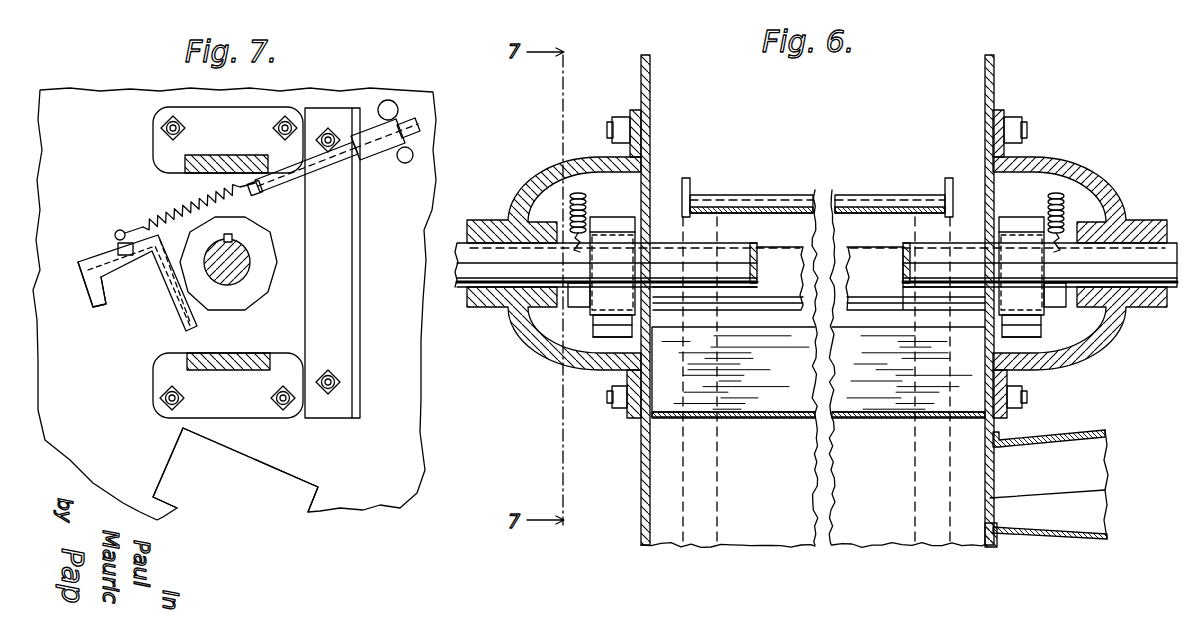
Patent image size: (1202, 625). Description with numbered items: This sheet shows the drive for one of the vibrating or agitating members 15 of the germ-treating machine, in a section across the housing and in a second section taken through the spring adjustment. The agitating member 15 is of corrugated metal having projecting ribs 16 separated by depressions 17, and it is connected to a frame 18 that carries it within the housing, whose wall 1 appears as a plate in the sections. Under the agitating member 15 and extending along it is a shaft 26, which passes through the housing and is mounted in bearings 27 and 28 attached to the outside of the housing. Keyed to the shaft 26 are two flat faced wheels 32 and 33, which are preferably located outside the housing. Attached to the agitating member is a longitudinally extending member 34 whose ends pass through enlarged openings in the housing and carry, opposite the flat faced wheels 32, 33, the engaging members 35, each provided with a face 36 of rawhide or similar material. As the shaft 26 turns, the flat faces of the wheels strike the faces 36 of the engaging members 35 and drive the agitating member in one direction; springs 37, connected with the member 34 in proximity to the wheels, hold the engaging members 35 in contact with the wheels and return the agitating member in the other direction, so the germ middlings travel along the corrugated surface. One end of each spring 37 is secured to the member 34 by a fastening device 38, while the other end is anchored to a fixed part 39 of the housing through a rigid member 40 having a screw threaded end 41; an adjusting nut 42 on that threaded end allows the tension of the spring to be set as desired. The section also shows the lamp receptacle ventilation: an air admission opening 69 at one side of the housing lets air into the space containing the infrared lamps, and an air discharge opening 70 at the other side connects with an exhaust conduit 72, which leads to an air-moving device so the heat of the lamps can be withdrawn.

In FIG. 7, the frame plate 1 is at (418, 433).
In FIG. 6, the frame plate 1 is at (994, 72).
In FIG. 6, the vibrating or agitating member 15 is at (872, 186).
In FIG. 6, the projecting ribs 16 is at (777, 207).
In FIG. 6, the depressions 17 is at (825, 196).
In FIG. 6, the frame 18 is at (690, 182).
In FIG. 7, the shaft 26 is at (245, 252).
In FIG. 6, the shaft 26 is at (726, 242).
In FIG. 6, the bearing 27 is at (1140, 225).
In FIG. 6, the bearing 28 is at (480, 225).
In FIG. 7, the flat faced wheel 32 is at (270, 276).
In FIG. 6, the flat faced wheel 32 is at (612, 228).
In FIG. 6, the flat faced wheel 33 is at (1015, 222).
In FIG. 7, the longitudinally extending member 34 is at (95, 278).
In FIG. 6, the longitudinally extending member 34 is at (575, 297).
In FIG. 7, the engaging member 35 is at (178, 305).
In FIG. 6, the engaging member 35 is at (608, 335).
In FIG. 7, the face 36 is at (197, 318).
In FIG. 6, the face 36 is at (593, 327).
In FIG. 7, the spring 37 is at (178, 208).
In FIG. 6, the spring 37 is at (578, 193).
In FIG. 7, the fastening device 38 is at (118, 233).
In FIG. 6, the fastening device 38 is at (575, 235).
In FIG. 7, the fixed part of the housing 39 is at (358, 196).
In FIG. 7, the rigid member 40 is at (325, 165).
In FIG. 7, the screw threaded end 41 is at (416, 127).
In FIG. 7, the adjusting nut 42 is at (390, 107).
In FIG. 7, the air admission opening 69 is at (177, 455).
In FIG. 6, the air admission opening 69 is at (660, 474).
In FIG. 6, the air discharge opening 70 is at (989, 475).
In FIG. 6, the exhaust conduit 72 is at (1057, 523).